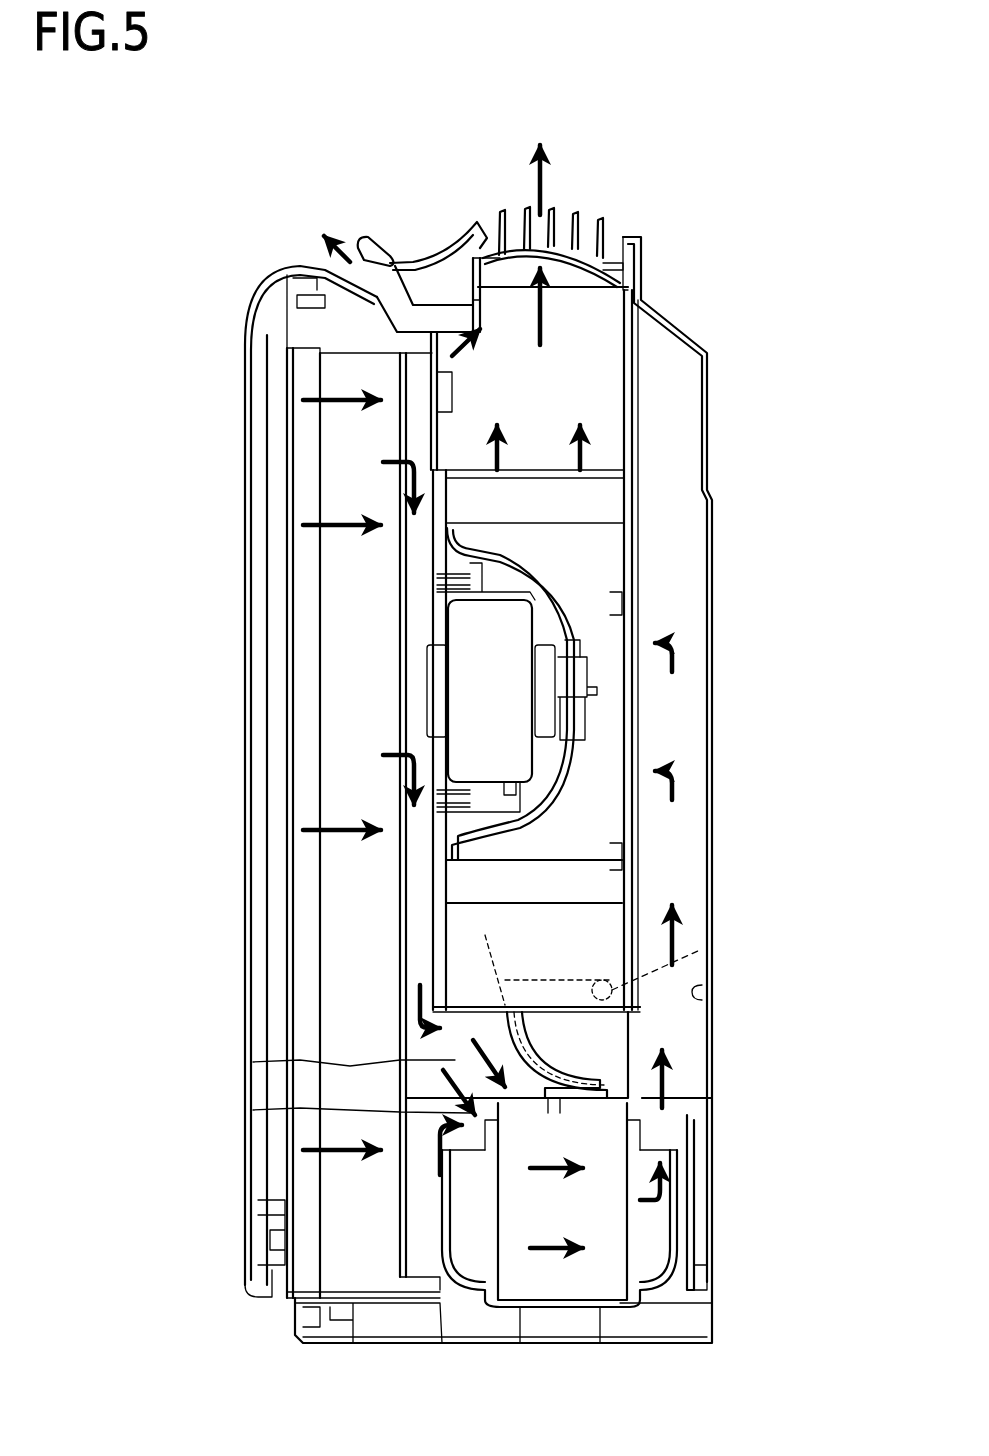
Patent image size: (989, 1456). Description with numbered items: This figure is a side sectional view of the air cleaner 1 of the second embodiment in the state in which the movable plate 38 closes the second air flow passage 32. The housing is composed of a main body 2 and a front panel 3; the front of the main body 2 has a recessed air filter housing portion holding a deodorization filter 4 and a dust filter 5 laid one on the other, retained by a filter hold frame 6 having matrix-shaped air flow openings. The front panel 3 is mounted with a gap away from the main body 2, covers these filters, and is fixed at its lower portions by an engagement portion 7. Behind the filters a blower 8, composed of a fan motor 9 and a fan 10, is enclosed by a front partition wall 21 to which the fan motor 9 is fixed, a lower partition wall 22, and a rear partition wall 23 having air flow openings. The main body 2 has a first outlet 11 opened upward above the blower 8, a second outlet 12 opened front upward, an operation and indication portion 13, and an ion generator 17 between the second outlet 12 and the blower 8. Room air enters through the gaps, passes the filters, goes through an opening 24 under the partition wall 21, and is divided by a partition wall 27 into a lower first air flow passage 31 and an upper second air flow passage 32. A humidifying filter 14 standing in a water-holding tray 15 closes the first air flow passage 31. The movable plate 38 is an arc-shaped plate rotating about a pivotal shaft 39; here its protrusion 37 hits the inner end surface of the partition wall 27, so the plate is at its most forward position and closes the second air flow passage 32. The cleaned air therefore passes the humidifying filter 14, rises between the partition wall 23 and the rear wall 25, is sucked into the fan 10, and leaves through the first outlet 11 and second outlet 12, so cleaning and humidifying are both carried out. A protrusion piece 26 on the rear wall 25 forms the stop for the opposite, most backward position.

The air cleaner 1 is at (227, 225).
The main body 2 is at (702, 345).
The front panel 3 is at (250, 302).
The deodorization filter 4 is at (305, 567).
The dust filter 5 is at (340, 497).
The filter hold frame 6 is at (285, 636).
The engagement portion 7 is at (262, 1240).
The blower 8 is at (603, 470).
The fan motor 9 is at (522, 625).
The fan 10 is at (612, 548).
The first outlet 11 is at (590, 222).
The second outlet 12 is at (354, 245).
The operation and indication portion 13 is at (434, 242).
The humidifying filter 14 is at (600, 1215).
The tray 15 is at (650, 1312).
The ion generator 17 is at (430, 385).
The partition wall 21 is at (432, 940).
The partition wall 22 is at (550, 1006).
The partition wall 23 is at (645, 740).
The opening 24 is at (422, 1005).
The rear wall 25 is at (708, 835).
The protrusion piece 26 is at (705, 990).
The partition wall 27 is at (580, 1104).
The first air flow passage 31 is at (253, 1110).
The second air flow passage 32 is at (253, 1062).
The protrusion 37 is at (642, 1100).
The movable plate 38 is at (634, 1068).
The pivotal shaft 39 is at (682, 960).